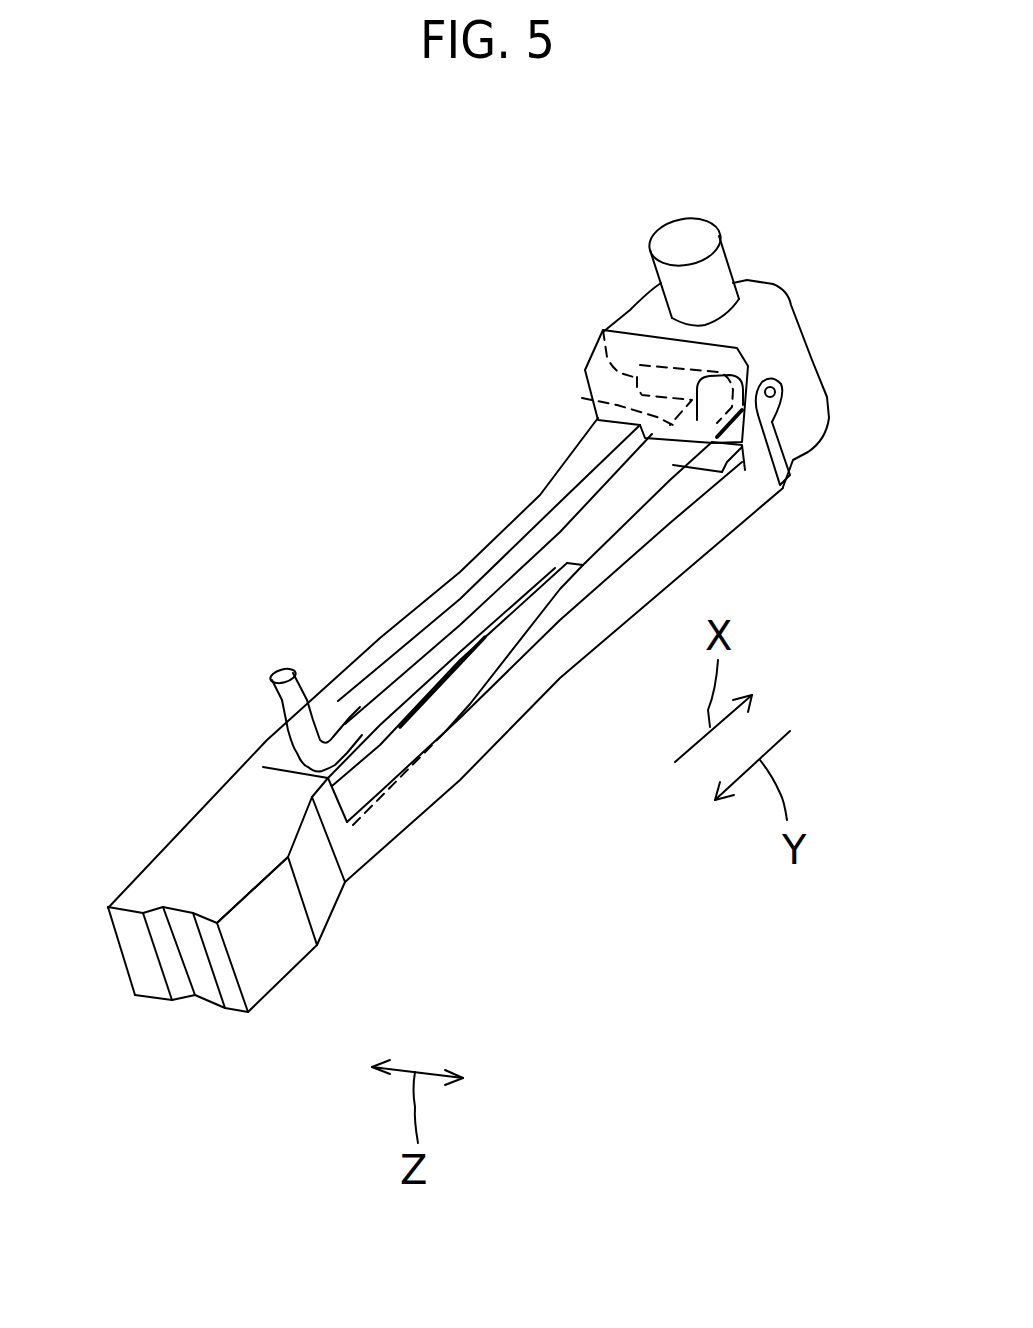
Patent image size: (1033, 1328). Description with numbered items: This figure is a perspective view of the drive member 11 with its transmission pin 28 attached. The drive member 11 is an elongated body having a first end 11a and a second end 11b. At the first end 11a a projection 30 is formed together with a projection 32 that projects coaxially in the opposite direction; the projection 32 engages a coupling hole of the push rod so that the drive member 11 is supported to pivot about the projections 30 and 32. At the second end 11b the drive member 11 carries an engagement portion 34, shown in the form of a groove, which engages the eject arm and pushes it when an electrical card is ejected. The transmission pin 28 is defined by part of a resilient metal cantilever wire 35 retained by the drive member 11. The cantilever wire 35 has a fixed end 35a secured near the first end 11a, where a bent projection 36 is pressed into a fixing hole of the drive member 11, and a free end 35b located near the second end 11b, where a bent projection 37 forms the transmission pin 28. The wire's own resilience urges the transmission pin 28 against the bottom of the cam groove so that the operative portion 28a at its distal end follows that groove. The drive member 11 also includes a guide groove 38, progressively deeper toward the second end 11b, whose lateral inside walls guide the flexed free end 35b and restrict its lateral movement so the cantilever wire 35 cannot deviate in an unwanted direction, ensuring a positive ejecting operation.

The drive member 11 is at (560, 680).
The first end 11a is at (790, 348).
The second end 11b is at (172, 853).
The transmission pin 28 is at (287, 700).
The operative portion 28a is at (287, 670).
The projection 30 is at (680, 237).
The projection 32 is at (793, 467).
The engagement portion 34 is at (192, 960).
The cantilever wire 35 is at (490, 590).
The fixed end 35a is at (582, 398).
The free end 35b is at (343, 723).
The bent projection 36 is at (600, 333).
The bent projection 37 is at (280, 700).
The guide groove 38 is at (415, 730).